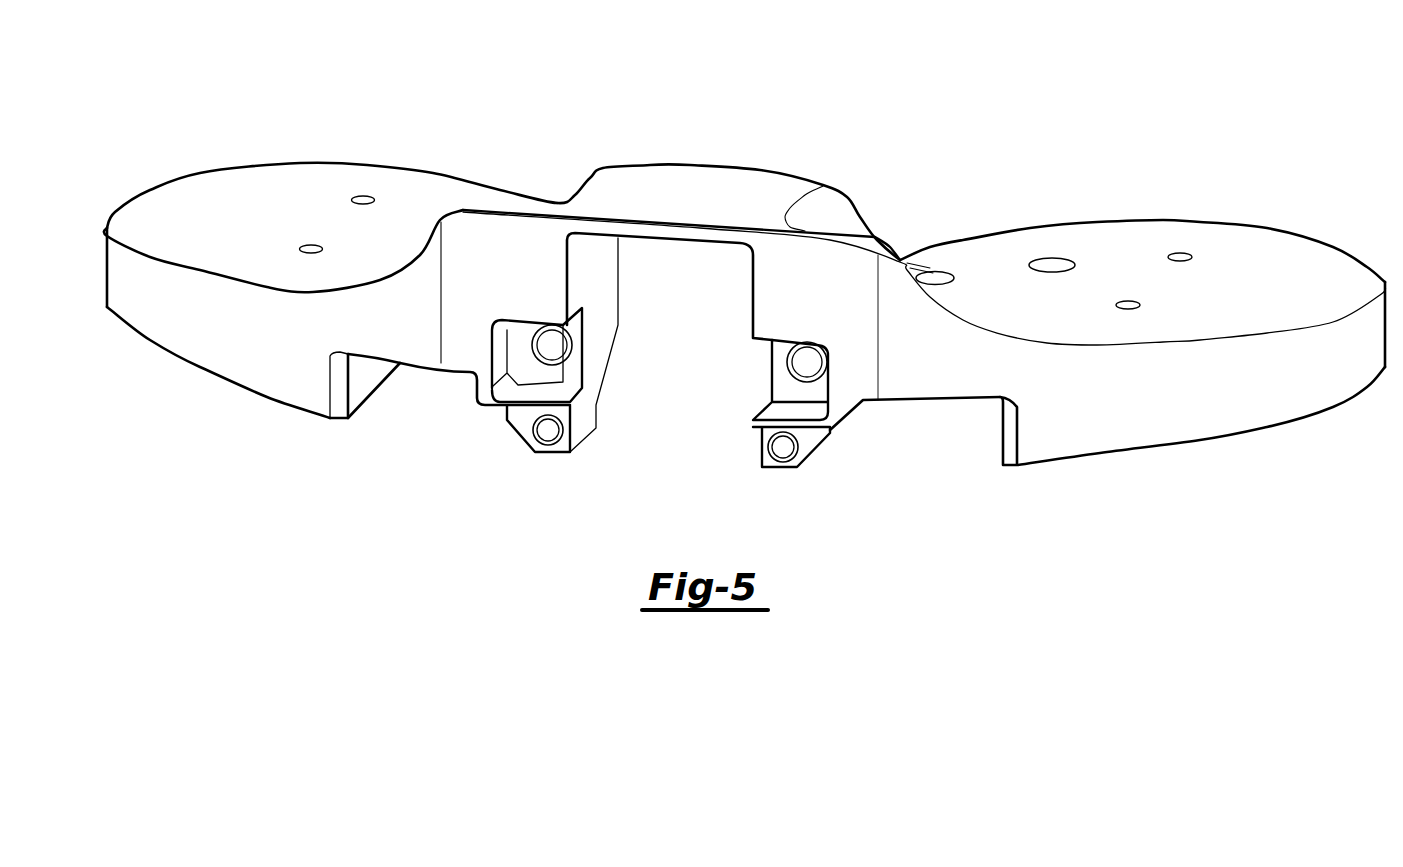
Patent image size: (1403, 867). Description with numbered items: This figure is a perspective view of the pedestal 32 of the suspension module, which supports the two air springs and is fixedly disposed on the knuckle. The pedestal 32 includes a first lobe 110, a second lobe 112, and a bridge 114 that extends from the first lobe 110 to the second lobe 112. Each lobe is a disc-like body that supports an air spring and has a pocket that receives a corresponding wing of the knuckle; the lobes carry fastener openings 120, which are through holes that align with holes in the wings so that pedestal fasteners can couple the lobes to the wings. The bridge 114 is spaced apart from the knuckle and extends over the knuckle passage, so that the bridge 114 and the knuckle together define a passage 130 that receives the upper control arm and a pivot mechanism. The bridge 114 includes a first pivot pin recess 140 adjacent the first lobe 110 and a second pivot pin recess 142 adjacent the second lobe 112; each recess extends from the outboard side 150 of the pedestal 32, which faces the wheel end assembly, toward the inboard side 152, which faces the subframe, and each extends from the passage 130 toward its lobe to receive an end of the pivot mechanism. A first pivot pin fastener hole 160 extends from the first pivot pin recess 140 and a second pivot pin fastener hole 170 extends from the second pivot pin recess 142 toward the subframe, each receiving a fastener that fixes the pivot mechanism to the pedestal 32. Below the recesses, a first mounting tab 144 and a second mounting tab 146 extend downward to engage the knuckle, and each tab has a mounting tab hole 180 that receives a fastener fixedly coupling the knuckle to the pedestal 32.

The pedestal 32 is at (383, 128).
The first lobe 110 is at (223, 190).
The second lobe 112 is at (1247, 247).
The bridge 114 is at (703, 163).
The fastener openings 120 is at (1053, 263).
The passage 130 is at (692, 302).
The first pivot pin recess 140 is at (570, 374).
The second pivot pin recess 142 is at (785, 385).
The first mounting tab 144 is at (560, 455).
The second mounting tab 146 is at (772, 465).
The outboard side 150 is at (517, 242).
The inboard side 152 is at (863, 213).
The first pivot pin fastener hole 160 is at (556, 345).
The second pivot pin fastener hole 170 is at (797, 360).
The mounting tab hole 180 is at (548, 432).